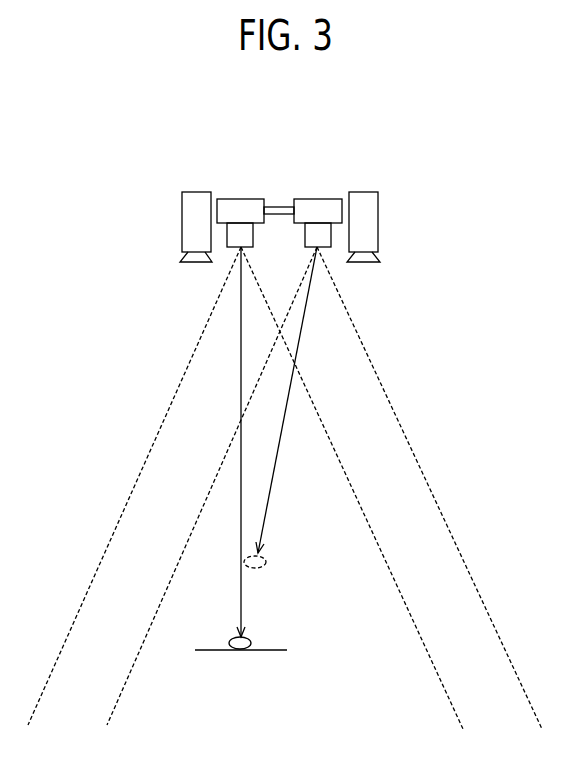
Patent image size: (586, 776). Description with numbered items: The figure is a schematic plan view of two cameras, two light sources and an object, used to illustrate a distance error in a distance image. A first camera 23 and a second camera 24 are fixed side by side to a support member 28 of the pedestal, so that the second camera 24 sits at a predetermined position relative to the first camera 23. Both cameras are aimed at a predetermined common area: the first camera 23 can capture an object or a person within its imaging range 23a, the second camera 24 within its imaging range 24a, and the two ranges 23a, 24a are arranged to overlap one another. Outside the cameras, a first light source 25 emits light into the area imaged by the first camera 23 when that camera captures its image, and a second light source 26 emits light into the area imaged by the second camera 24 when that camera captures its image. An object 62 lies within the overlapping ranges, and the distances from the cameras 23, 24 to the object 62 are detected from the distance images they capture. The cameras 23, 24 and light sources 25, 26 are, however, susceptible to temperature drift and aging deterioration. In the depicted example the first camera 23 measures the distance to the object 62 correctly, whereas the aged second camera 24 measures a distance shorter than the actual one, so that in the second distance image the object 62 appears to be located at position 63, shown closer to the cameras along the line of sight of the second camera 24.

The first camera 23 is at (235, 199).
The second camera 24 is at (325, 199).
The support member 28 is at (279, 207).
The first light source 25 is at (182, 216).
The second light source 26 is at (378, 216).
The imaging range 23a is at (167, 410).
The imaging range 24a is at (393, 410).
The object 62 is at (240, 650).
The position 63 is at (265, 565).